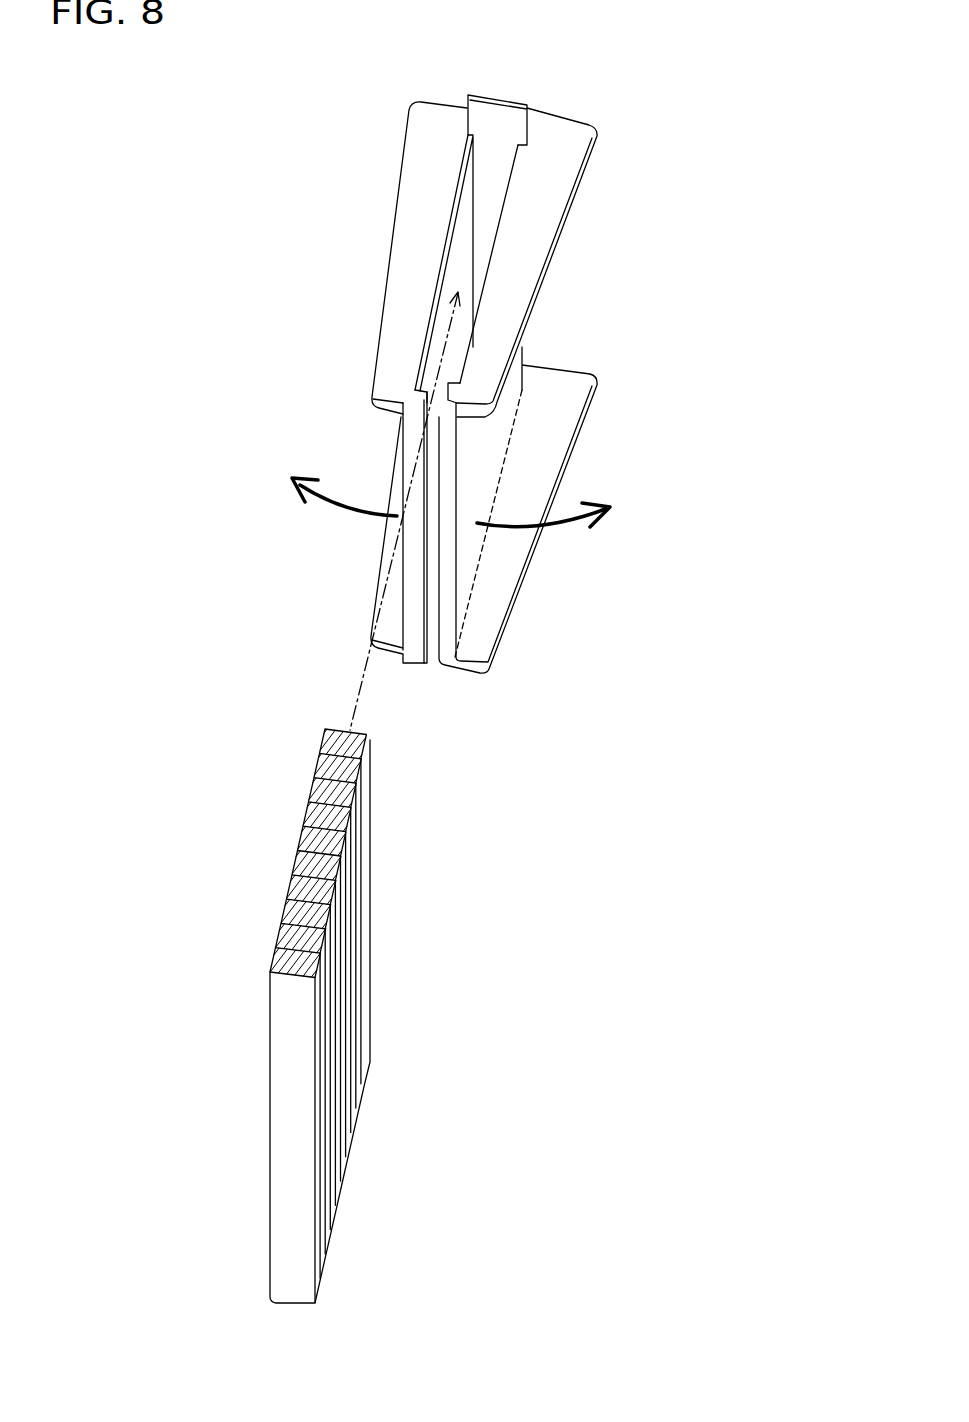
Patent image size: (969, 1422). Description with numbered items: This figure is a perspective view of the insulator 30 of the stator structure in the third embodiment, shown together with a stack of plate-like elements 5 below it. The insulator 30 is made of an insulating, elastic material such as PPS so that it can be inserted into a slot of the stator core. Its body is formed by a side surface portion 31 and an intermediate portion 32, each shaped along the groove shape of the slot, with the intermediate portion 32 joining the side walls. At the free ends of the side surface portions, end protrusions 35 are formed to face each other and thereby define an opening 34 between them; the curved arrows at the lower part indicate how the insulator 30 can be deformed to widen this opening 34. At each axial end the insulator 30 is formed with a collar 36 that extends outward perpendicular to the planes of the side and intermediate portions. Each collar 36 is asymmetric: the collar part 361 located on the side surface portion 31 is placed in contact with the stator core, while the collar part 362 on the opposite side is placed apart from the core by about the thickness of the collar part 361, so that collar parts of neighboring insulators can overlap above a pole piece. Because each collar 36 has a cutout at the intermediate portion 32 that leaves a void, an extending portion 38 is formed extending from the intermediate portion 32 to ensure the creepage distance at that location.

The battery cell stack 5 is at (313, 812).
The insulator 30 is at (448, 93).
The side surface portion 31 is at (460, 240).
The intermediate portion 32 is at (487, 212).
The opening 34 is at (438, 676).
The end protrusion 35 is at (413, 392).
The collar 36 is at (593, 115).
The collar part 361 is at (422, 175).
The collar part 362 is at (557, 177).
The extending portion 38 is at (498, 118).